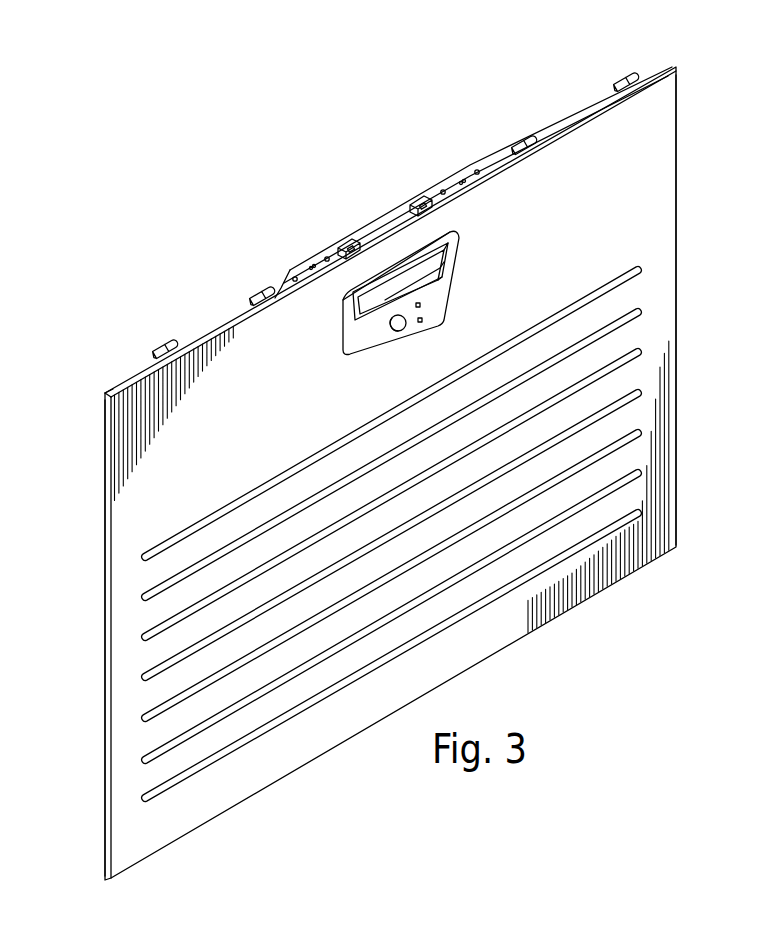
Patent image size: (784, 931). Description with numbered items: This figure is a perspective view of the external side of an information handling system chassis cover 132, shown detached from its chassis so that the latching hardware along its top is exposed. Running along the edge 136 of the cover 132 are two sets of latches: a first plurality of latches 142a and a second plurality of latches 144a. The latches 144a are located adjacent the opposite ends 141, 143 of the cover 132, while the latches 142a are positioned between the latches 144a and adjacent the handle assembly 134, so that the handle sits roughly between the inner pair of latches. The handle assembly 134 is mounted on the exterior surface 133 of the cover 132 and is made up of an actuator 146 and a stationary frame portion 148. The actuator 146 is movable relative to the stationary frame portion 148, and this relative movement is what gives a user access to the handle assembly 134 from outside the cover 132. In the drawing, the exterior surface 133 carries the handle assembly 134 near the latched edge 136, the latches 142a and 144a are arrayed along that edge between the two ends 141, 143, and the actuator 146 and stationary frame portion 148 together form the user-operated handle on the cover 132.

The cover 132 is at (678, 186).
The exterior surface 133 is at (262, 448).
The handle assembly 134 is at (409, 317).
The edge 136 is at (124, 384).
The end 141 is at (104, 470).
The first plurality of latches 142a is at (345, 242).
The end 143 is at (678, 280).
The second plurality of latches 144a is at (165, 344).
The actuator 146 is at (340, 303).
The stationary frame portion 148 is at (352, 350).